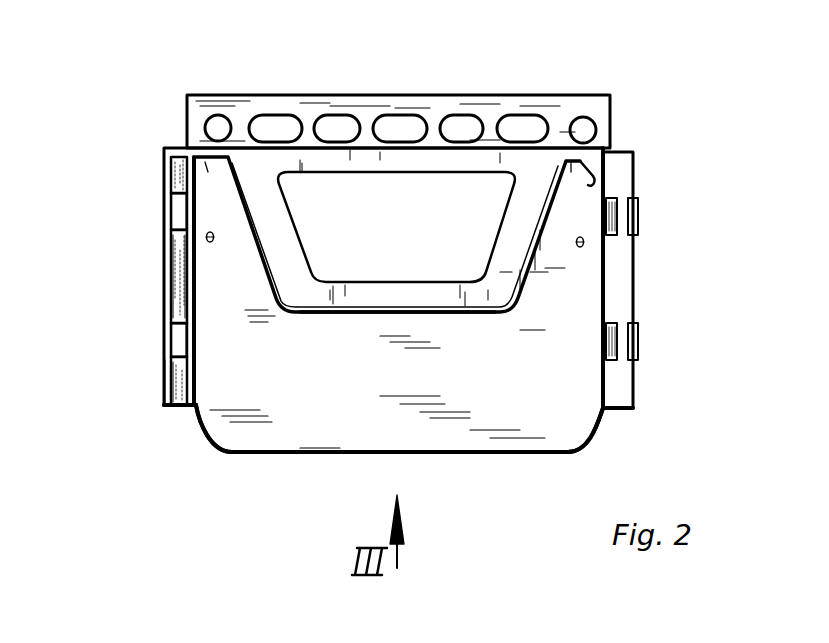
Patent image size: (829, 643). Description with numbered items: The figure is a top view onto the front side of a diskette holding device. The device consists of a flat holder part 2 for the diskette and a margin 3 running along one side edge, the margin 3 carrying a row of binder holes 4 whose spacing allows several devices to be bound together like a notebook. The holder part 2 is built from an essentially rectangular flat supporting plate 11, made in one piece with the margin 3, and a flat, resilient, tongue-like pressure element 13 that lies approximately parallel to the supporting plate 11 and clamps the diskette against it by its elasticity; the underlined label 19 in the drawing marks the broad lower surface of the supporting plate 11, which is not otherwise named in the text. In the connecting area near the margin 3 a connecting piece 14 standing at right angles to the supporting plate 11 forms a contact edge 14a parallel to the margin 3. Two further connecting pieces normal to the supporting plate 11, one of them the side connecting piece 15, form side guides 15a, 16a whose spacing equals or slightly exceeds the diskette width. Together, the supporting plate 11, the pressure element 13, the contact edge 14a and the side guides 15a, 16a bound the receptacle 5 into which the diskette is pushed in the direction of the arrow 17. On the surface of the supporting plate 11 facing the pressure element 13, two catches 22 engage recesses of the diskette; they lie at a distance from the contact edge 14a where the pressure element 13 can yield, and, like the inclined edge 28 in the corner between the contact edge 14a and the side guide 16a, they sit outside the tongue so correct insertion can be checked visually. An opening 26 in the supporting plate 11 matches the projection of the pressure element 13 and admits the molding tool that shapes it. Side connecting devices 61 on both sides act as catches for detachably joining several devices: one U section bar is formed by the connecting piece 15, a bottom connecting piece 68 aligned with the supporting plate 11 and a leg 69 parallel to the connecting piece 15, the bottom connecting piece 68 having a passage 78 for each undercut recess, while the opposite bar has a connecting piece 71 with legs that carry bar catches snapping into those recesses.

The holder part 2 is at (139, 247).
The margin 3 is at (162, 113).
The holes 4 is at (450, 122).
The receptacle 5 is at (238, 432).
The supporting plate 11 is at (518, 442).
The pressure element 13 is at (457, 229).
The connecting piece 14 is at (226, 155).
The contact edge 14a is at (206, 164).
The side connecting piece 15 is at (192, 335).
The side guide 15a is at (200, 385).
The side guide 16a is at (595, 311).
The arrow 17 is at (272, 434).
The lower panel 19 is at (483, 394).
The catches 22 is at (216, 240).
The opening 26 is at (360, 313).
The inclined edge 28 is at (592, 186).
The side connecting devices 61 is at (143, 432).
The bottom connecting piece 68 is at (172, 283).
The leg 69 is at (163, 378).
The connecting piece 71 is at (623, 268).
The passage 78 is at (175, 208).